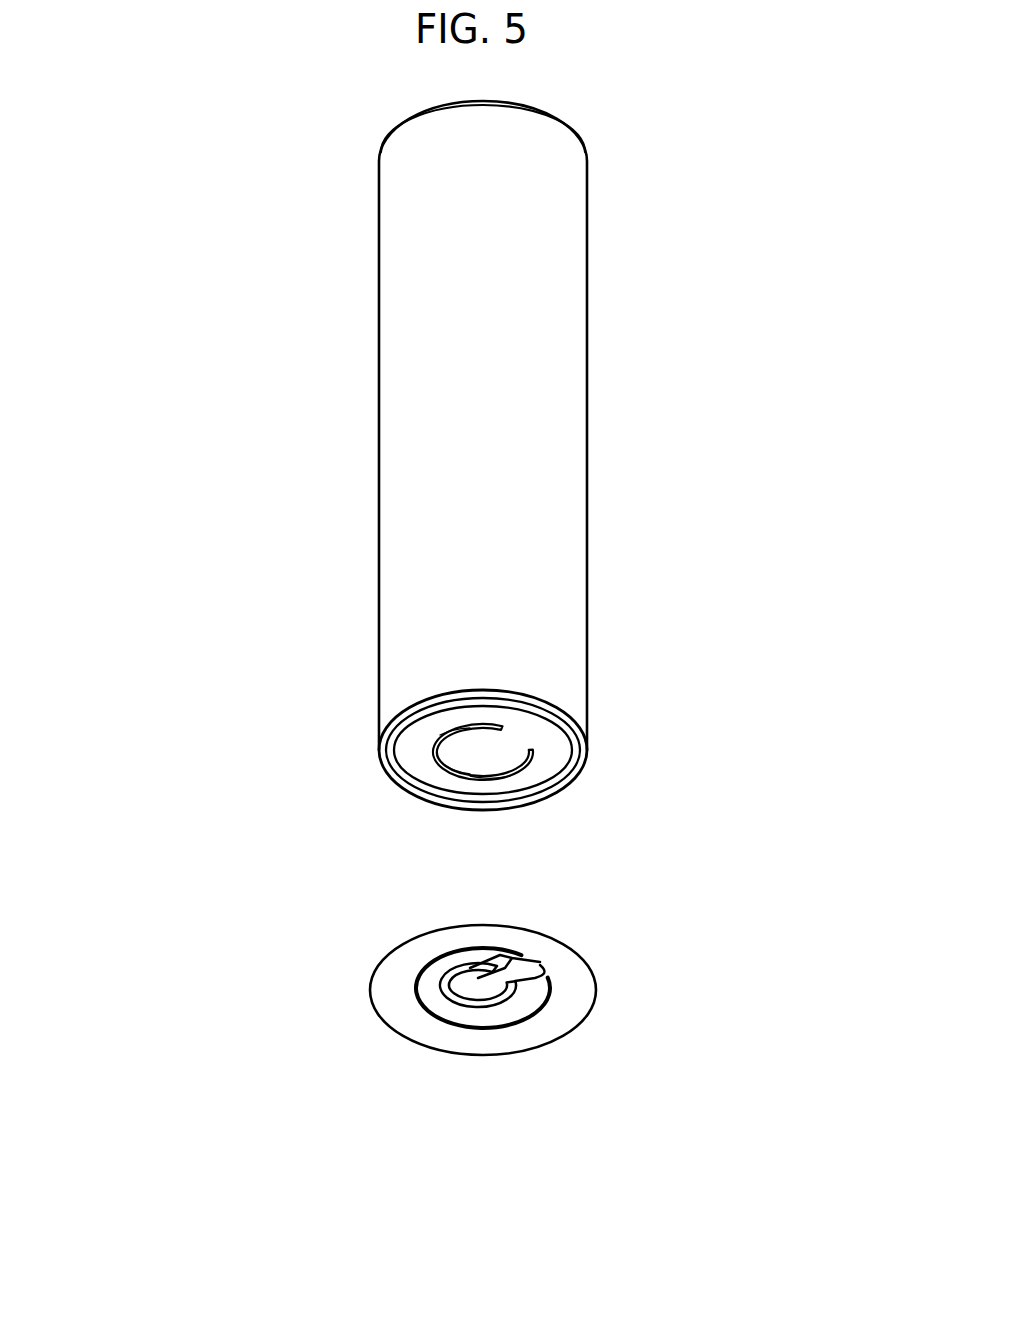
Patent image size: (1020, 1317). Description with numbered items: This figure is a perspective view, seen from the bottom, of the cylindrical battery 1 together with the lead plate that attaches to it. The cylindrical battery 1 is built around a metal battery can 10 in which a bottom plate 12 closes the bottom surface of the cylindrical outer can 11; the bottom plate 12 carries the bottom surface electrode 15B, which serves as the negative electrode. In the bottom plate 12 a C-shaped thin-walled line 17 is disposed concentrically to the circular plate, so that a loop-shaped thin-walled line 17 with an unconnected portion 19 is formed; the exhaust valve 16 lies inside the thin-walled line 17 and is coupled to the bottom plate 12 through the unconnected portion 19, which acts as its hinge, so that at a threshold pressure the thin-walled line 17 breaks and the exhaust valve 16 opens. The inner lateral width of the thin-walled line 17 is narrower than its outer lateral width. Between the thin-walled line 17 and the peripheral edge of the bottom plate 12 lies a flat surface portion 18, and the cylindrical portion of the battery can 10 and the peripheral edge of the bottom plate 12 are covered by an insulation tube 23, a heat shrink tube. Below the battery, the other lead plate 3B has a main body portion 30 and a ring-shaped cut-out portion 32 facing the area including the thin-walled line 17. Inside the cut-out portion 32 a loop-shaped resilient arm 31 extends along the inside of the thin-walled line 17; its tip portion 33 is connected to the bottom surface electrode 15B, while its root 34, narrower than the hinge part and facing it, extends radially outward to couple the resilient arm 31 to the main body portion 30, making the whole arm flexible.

The cylindrical battery 1 is at (637, 332).
The battery can 10 is at (190, 395).
The outer can 11 is at (430, 487).
The bottom plate 12 is at (257, 625).
The bottom surface electrode 15B is at (502, 735).
The exhaust valve 16 is at (468, 758).
The thin-walled line 17 is at (492, 785).
The flat surface portion 18 is at (432, 728).
The unconnected portion 19 is at (522, 742).
The insulation tube 23 is at (577, 765).
The other lead plate 3B is at (632, 990).
The main body portion 30 is at (532, 1033).
The resilient arm 31 is at (450, 1003).
The cut-out portion 32 is at (477, 1042).
The tip portion 33 is at (483, 962).
The root 34 is at (532, 975).